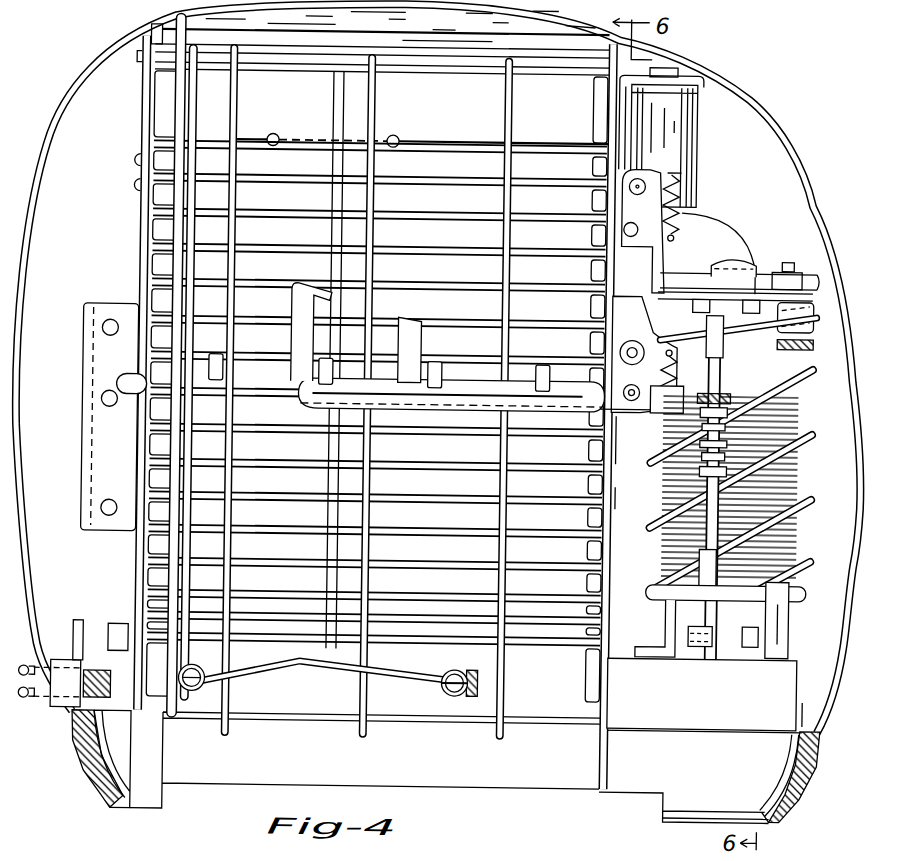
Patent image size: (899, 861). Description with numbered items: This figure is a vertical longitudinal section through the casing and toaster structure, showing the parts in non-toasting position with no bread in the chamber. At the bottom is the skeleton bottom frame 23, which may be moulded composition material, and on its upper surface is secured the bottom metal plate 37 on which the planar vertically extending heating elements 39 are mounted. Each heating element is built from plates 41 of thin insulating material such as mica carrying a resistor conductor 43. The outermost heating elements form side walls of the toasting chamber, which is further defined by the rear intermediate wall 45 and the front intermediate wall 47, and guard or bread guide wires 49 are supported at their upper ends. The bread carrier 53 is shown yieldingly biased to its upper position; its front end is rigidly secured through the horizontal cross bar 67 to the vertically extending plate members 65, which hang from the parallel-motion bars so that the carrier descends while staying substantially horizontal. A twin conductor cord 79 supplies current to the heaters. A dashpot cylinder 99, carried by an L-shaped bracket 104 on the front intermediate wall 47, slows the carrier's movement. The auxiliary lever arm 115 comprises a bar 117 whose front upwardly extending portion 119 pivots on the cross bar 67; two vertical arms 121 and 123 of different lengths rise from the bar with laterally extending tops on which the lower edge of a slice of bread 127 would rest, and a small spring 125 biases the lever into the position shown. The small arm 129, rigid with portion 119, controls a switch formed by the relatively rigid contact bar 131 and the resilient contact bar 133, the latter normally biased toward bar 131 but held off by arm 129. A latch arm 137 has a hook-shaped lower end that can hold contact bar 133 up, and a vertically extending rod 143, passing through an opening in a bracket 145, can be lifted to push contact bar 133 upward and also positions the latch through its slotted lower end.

The skeleton bottom frame 23 is at (821, 769).
The bottom metal plate 37 is at (557, 727).
The planar vertically extending heating element 39 is at (433, 112).
The plate of thin electric insulating material 41 is at (318, 684).
The resistor conductor 43 is at (465, 140).
The rear intermediate wall 45 is at (138, 104).
The front intermediate wall 47 is at (603, 104).
The guard or bread guide wire 49 is at (510, 681).
The bread carrier 53 is at (270, 413).
The vertically extending plate member 65 is at (646, 436).
The horizontal cross bar 67 is at (655, 418).
The twin conductor cord 79 is at (37, 706).
The cylinder 99 is at (696, 152).
The bracket 104 is at (695, 75).
The auxiliary lever arm 115 is at (400, 440).
The bar 117 is at (470, 413).
The front upwardly extending portion 119 is at (590, 362).
The vertical arm 121 is at (418, 338).
The vertical arm 123 is at (290, 333).
The small spring 125 is at (627, 459).
The slice of bread 127 is at (633, 838).
The small arm 129 is at (600, 313).
The relatively rigid contact bar 131 is at (817, 316).
The resilient contact bar 133 is at (764, 274).
The latch arm 137 is at (650, 282).
The vertically extending rod 143 is at (666, 502).
The bracket 145 is at (667, 620).